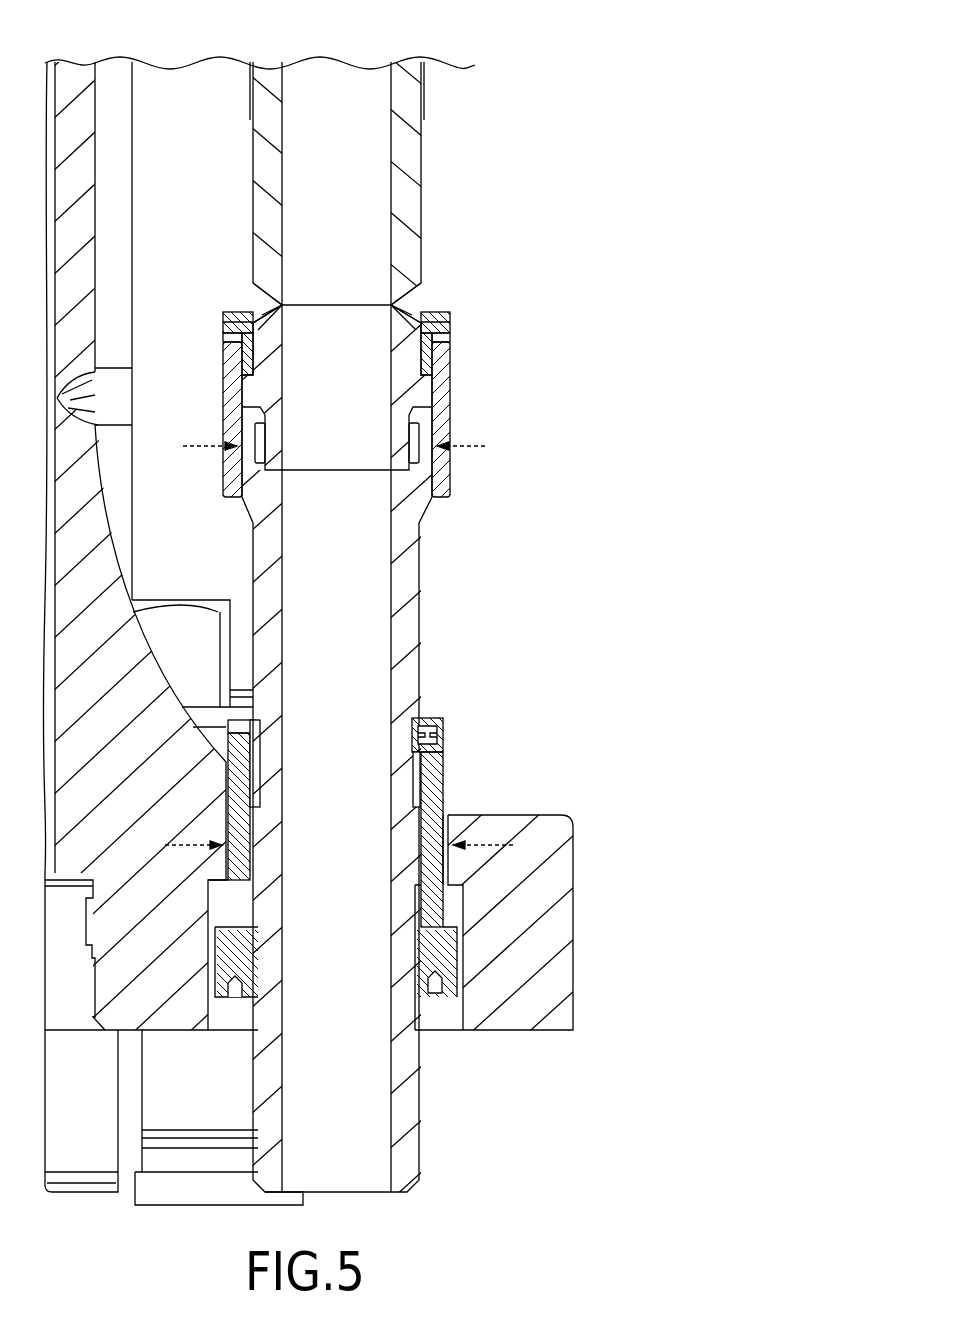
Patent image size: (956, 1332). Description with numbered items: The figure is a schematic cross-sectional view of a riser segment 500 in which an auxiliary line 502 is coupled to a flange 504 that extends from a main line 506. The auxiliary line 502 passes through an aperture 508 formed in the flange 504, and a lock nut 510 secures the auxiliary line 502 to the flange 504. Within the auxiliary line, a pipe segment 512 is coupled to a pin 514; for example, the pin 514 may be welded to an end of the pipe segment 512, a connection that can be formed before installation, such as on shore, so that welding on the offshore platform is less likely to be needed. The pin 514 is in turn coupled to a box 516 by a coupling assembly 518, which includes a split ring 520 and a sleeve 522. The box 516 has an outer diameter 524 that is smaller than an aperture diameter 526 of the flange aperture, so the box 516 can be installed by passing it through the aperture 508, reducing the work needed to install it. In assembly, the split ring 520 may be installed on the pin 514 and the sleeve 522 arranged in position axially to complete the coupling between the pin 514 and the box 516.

The riser segment 500 is at (597, 154).
The auxiliary line 502 is at (412, 68).
The flange 504 is at (560, 940).
The main line 506 is at (70, 75).
The aperture 508 is at (472, 788).
The lock nut 510 is at (440, 830).
The pipe segment 512 is at (410, 208).
The pin 514 is at (402, 323).
The box 516 is at (422, 510).
The coupling assembly 518 is at (477, 404).
The split ring 520 is at (450, 334).
The sleeve 522 is at (440, 470).
The outer diameter 524 is at (190, 448).
The aperture diameter 526 is at (513, 845).